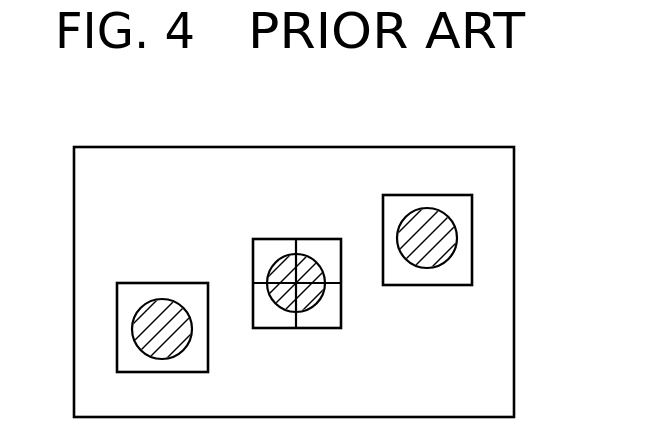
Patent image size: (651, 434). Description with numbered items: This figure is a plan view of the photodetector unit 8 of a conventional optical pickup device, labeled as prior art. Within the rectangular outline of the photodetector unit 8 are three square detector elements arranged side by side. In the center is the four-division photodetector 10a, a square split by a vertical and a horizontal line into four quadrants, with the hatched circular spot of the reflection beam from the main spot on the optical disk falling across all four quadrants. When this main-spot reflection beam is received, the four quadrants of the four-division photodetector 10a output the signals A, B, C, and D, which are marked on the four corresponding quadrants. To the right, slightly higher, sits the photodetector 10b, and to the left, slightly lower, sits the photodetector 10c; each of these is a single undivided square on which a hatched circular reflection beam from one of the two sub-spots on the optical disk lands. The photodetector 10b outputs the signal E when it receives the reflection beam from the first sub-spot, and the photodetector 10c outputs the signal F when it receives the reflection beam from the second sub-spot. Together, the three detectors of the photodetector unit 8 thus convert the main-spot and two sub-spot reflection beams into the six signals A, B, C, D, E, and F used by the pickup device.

The photodetector unit 8 is at (516, 355).
The four-division photodetector 10a is at (295, 239).
The photodetector 10b is at (426, 195).
The photodetector 10c is at (142, 283).
The signal A is at (266, 244).
The signal B is at (268, 322).
The signal C is at (327, 322).
The signal D is at (330, 245).
The signal E is at (455, 266).
The signal F is at (196, 366).